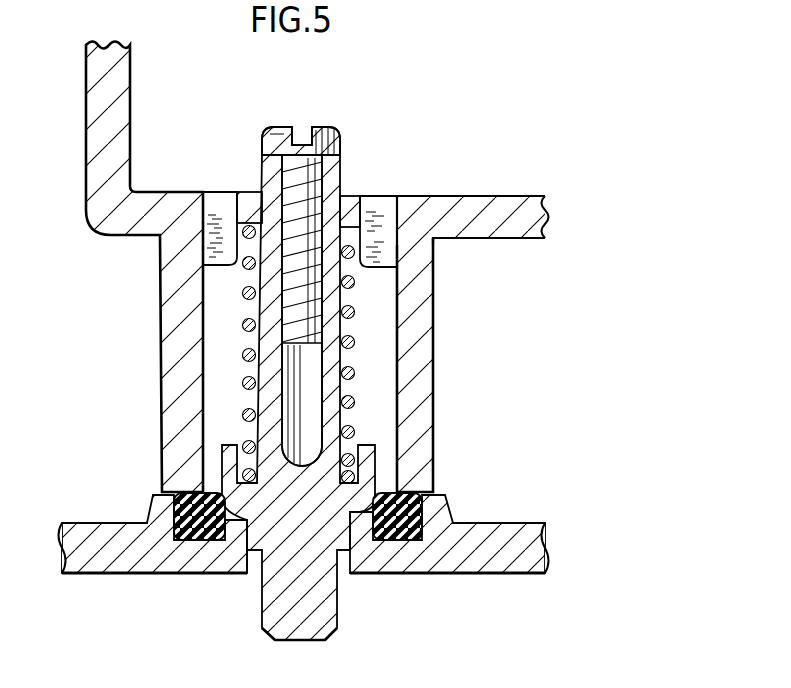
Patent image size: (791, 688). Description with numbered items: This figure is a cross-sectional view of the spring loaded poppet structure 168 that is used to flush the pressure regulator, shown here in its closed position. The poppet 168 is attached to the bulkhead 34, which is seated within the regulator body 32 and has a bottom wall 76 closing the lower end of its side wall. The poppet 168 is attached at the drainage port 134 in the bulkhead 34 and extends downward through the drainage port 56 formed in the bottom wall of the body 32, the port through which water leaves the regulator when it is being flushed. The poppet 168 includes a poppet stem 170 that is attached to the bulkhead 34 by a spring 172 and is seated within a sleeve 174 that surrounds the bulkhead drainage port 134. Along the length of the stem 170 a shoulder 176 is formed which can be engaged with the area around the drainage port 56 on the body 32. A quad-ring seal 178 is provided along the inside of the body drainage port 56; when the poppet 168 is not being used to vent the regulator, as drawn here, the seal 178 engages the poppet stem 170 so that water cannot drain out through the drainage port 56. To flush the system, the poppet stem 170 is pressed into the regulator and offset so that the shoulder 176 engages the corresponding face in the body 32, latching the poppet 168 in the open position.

The body 32 is at (479, 577).
The bulkhead 34 is at (510, 219).
The drainage port 56 is at (340, 575).
The bottom wall 76 is at (420, 218).
The drainage port 134 is at (362, 208).
The spring loaded poppet structure 168 is at (333, 129).
The poppet stem 170 is at (300, 379).
The spring 172 is at (355, 311).
The sleeve 174 is at (422, 416).
The shoulder 176 is at (252, 555).
The quad-ring seal 178 is at (416, 513).